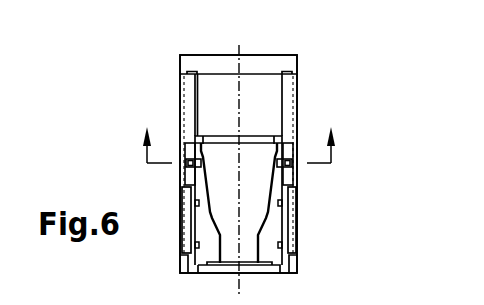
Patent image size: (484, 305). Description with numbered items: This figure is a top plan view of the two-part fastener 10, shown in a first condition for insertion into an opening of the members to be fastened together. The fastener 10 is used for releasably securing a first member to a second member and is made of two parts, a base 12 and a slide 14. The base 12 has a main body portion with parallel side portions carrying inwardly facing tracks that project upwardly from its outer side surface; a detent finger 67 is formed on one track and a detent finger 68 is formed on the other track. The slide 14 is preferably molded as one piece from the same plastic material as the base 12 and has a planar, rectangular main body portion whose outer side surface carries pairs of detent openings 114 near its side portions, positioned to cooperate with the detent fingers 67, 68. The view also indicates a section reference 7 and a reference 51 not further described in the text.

The two-part fastener 10 is at (375, 238).
The base 12 is at (324, 263).
The slide 14 is at (284, 230).
The central axis 51 is at (239, 277).
The detent finger 67 is at (296, 165).
The detent finger 68 is at (188, 165).
The detent openings 114 is at (195, 246).
The section line 7- 7 is at (239, 131).